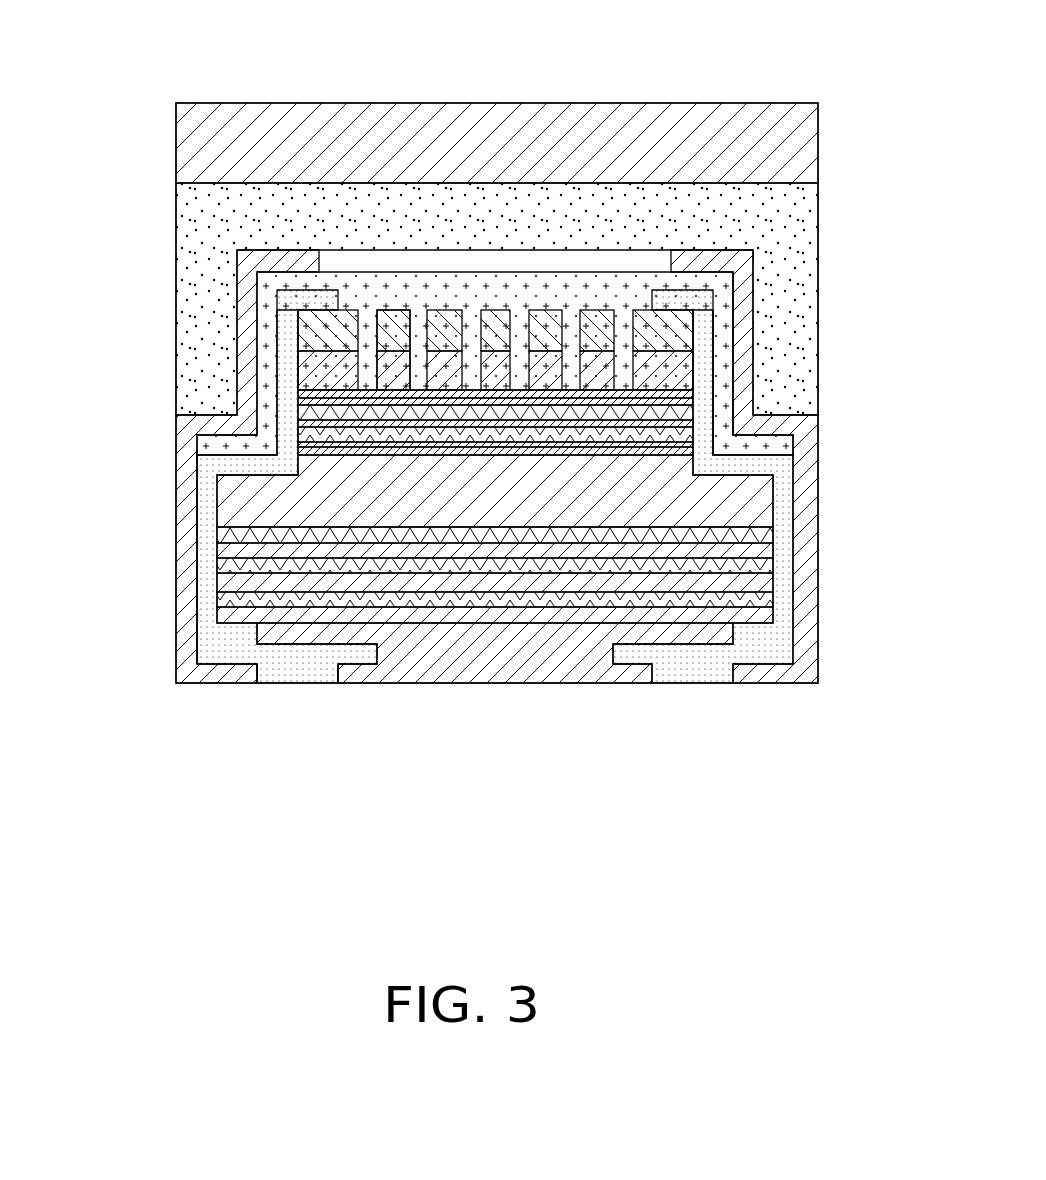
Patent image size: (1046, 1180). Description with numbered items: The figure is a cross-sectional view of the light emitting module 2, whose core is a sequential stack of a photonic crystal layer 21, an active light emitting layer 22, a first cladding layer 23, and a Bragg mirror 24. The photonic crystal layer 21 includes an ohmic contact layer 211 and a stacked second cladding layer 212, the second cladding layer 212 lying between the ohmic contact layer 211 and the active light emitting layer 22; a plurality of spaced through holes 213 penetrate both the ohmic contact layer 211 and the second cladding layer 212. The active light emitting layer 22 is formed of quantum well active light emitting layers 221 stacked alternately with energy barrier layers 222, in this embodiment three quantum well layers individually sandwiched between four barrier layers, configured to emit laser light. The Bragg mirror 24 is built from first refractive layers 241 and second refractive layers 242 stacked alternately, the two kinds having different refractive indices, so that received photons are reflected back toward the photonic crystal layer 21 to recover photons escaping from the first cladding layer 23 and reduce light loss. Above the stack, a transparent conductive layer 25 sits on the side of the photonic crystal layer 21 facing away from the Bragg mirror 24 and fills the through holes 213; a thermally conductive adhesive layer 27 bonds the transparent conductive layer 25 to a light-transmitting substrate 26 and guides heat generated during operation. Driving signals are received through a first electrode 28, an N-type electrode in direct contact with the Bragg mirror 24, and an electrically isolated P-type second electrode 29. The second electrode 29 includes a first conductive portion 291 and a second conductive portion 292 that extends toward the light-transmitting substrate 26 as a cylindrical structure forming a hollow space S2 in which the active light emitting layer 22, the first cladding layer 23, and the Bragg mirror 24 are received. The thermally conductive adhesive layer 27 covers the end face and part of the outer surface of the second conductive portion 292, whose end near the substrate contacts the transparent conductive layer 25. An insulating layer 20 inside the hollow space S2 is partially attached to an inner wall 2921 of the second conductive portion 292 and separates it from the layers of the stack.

The light emitting module 2 is at (430, 26).
The insulating layer 20 is at (302, 657).
The photonic crystal layer 21 is at (371, 331).
The ohmic contact layer 211 is at (395, 337).
The second cladding layer 212 is at (397, 373).
The through holes 213 is at (423, 332).
The active light emitting layer 22 is at (622, 407).
The quantum well active light emitting layers 221 is at (672, 395).
The energy barrier layers 222 is at (685, 403).
The first cladding layer 23 is at (743, 505).
The Bragg mirror 24 is at (582, 566).
The first refractive layers 241 is at (747, 535).
The second refractive layers 242 is at (753, 550).
The transparent conductive layer 25 is at (622, 275).
The light-transmitting substrate 26 is at (513, 128).
The thermally conductive adhesive layer 27 is at (590, 205).
The first electrode 28 is at (498, 657).
The second electrode 29 is at (482, 529).
The first conductive portion 291 is at (763, 672).
The second conductive portion 292 is at (805, 630).
The inner wall 2921 is at (197, 555).
The hollow space S2 is at (723, 350).